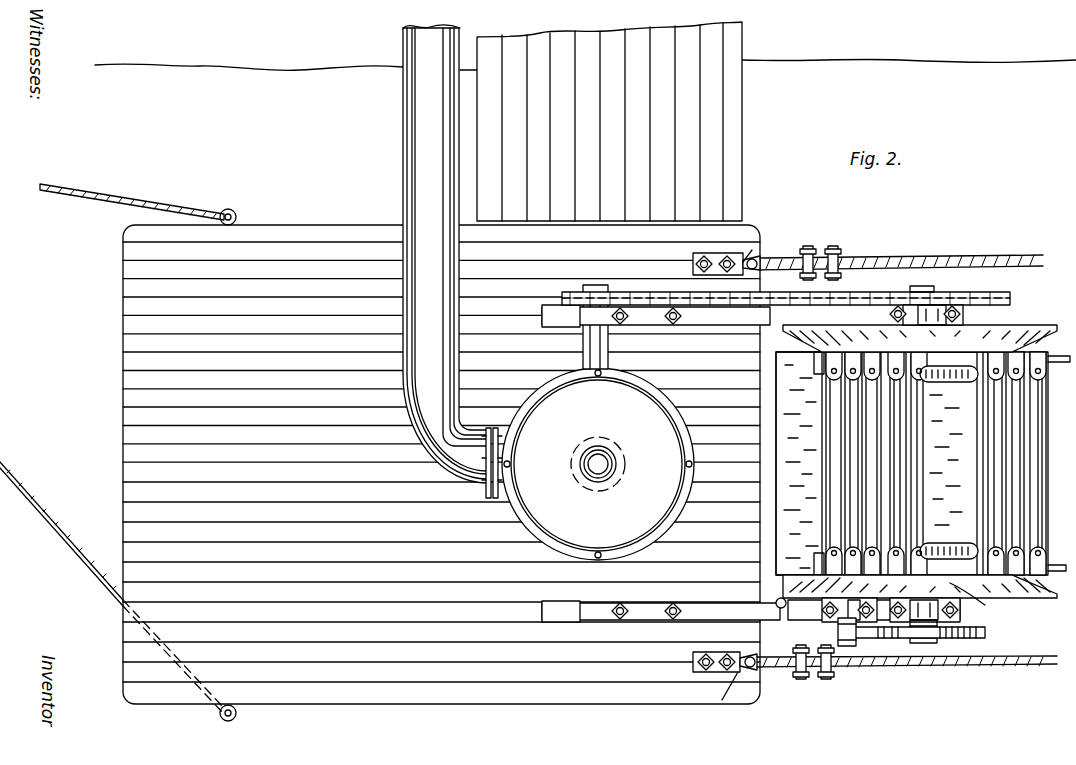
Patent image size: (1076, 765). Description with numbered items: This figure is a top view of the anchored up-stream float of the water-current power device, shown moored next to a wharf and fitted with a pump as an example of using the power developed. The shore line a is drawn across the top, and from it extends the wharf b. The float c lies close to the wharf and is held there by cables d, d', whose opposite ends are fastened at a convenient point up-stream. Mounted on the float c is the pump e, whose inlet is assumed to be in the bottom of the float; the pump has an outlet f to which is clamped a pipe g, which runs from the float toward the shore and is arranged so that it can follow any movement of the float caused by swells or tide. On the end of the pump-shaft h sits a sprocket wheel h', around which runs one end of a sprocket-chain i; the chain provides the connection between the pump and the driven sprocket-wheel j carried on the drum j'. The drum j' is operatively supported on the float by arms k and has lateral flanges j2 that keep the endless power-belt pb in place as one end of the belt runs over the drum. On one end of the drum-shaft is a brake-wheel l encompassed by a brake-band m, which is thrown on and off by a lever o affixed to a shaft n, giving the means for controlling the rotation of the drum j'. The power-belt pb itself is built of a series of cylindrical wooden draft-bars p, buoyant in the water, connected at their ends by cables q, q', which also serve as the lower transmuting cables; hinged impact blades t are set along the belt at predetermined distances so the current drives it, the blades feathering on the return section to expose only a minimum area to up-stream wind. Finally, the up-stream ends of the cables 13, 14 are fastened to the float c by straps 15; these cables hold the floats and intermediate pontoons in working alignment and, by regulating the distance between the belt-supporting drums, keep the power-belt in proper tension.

The shore line a is at (286, 72).
The wharf b is at (742, 175).
The float c is at (127, 340).
The cable d is at (138, 199).
The cable d' is at (118, 591).
The pump e is at (598, 464).
The outlet f is at (484, 499).
The pipe g is at (404, 160).
The pump-shaft h is at (608, 327).
The sprocket wheel h' is at (786, 250).
The sprocket-chain i is at (868, 294).
The driven sprocket-wheel j is at (930, 275).
The drum j' is at (974, 600).
The lateral flanges j2 is at (1040, 325).
The arms k is at (727, 326).
The brake-wheel l is at (964, 623).
The brake-band m is at (986, 633).
The shaft n is at (838, 633).
The lever o is at (781, 608).
The draft-bars p is at (920, 463).
The power-belt pb is at (951, 463).
The cable q is at (942, 368).
The cable q' is at (940, 555).
The impact blades t is at (788, 466).
The cable 13 is at (968, 664).
The cable 14 is at (1004, 262).
The straps 15 is at (754, 251).